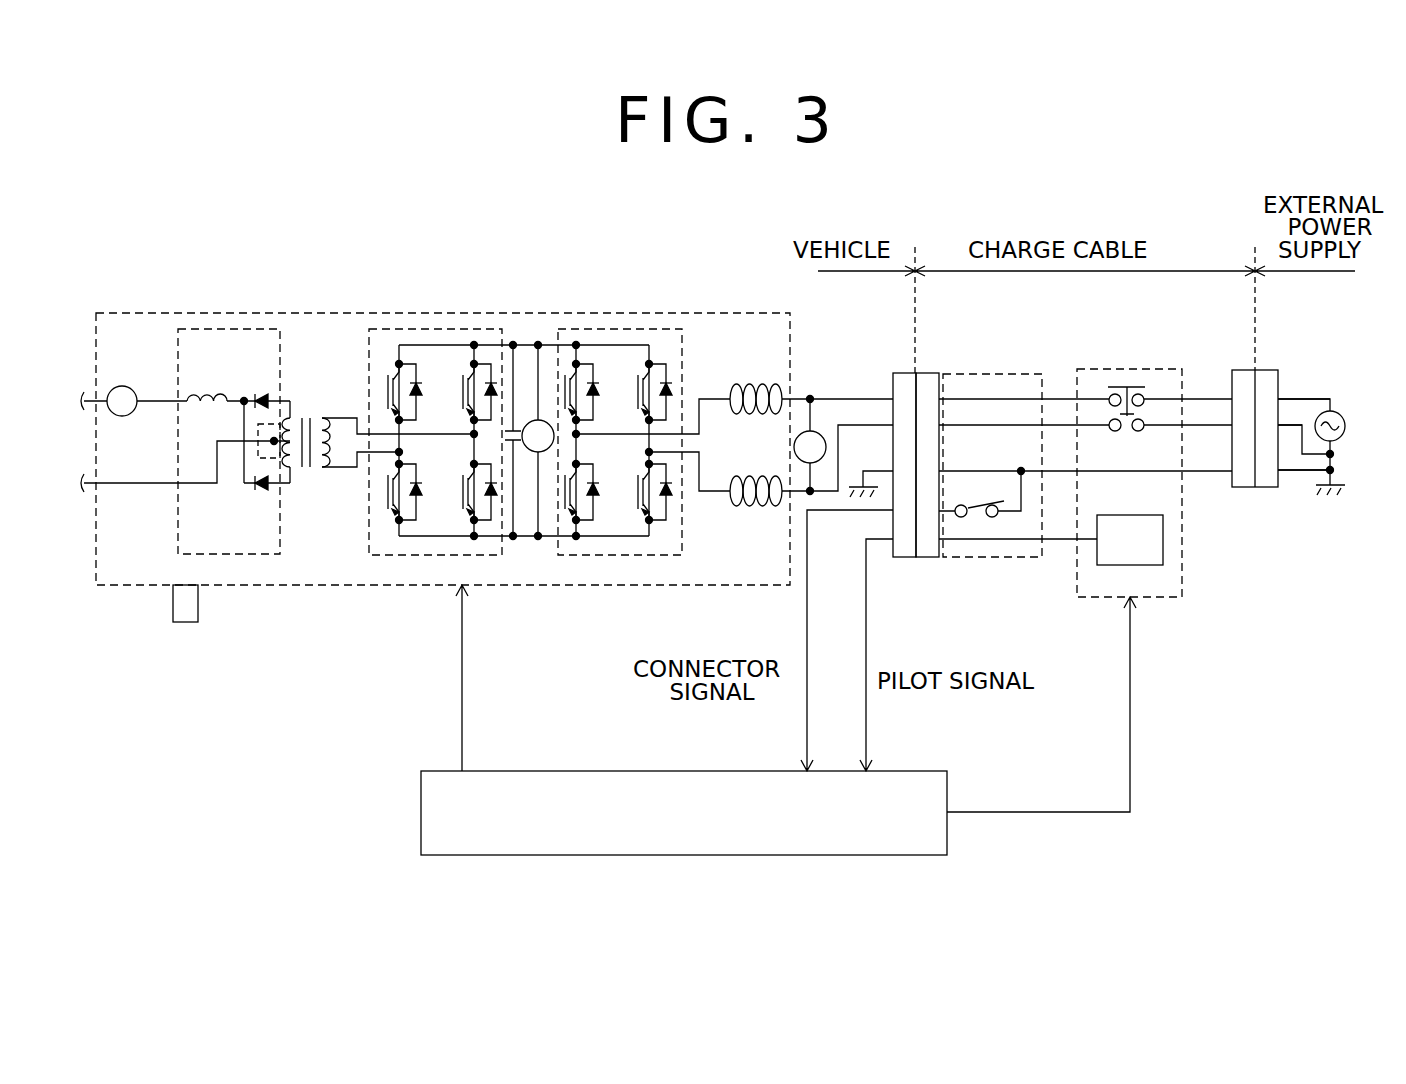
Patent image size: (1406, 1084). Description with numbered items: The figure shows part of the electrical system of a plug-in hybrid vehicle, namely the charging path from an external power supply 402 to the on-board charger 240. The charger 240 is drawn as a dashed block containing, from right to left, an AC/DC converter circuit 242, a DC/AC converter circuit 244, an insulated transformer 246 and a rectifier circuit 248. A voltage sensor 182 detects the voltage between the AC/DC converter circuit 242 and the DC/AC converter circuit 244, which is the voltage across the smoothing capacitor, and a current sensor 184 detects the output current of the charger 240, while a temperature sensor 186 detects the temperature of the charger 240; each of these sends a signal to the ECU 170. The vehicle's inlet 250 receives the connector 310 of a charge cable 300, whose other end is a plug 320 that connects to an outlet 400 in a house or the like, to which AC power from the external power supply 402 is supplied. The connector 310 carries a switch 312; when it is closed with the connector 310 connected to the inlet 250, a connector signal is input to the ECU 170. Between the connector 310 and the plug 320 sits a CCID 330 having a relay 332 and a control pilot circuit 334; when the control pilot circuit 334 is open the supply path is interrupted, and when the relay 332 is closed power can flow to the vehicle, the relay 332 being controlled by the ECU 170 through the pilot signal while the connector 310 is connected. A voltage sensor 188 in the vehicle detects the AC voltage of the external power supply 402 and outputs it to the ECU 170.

The ECU 170 is at (835, 855).
The voltage sensor 182 is at (538, 452).
The current sensor 184 is at (122, 386).
The temperature sensor 186 is at (185, 622).
The voltage sensor 188 is at (810, 431).
The charger 240 is at (375, 585).
The AC/DC converter circuit 242 is at (605, 555).
The DC/AC converter circuit 244 is at (490, 555).
The insulated transformer 246 is at (326, 495).
The rectifier circuit 248 is at (250, 555).
The inlet 250 is at (905, 373).
The charge cable 300 is at (1047, 342).
The connector 310 is at (925, 373).
The switch 312 is at (979, 534).
The plug 320 is at (1240, 370).
The CCID 330 is at (1168, 597).
The relay 332 is at (1093, 371).
The control pilot circuit 334 is at (1163, 540).
The outlet 400 is at (1268, 487).
The external power supply 402 is at (1330, 411).